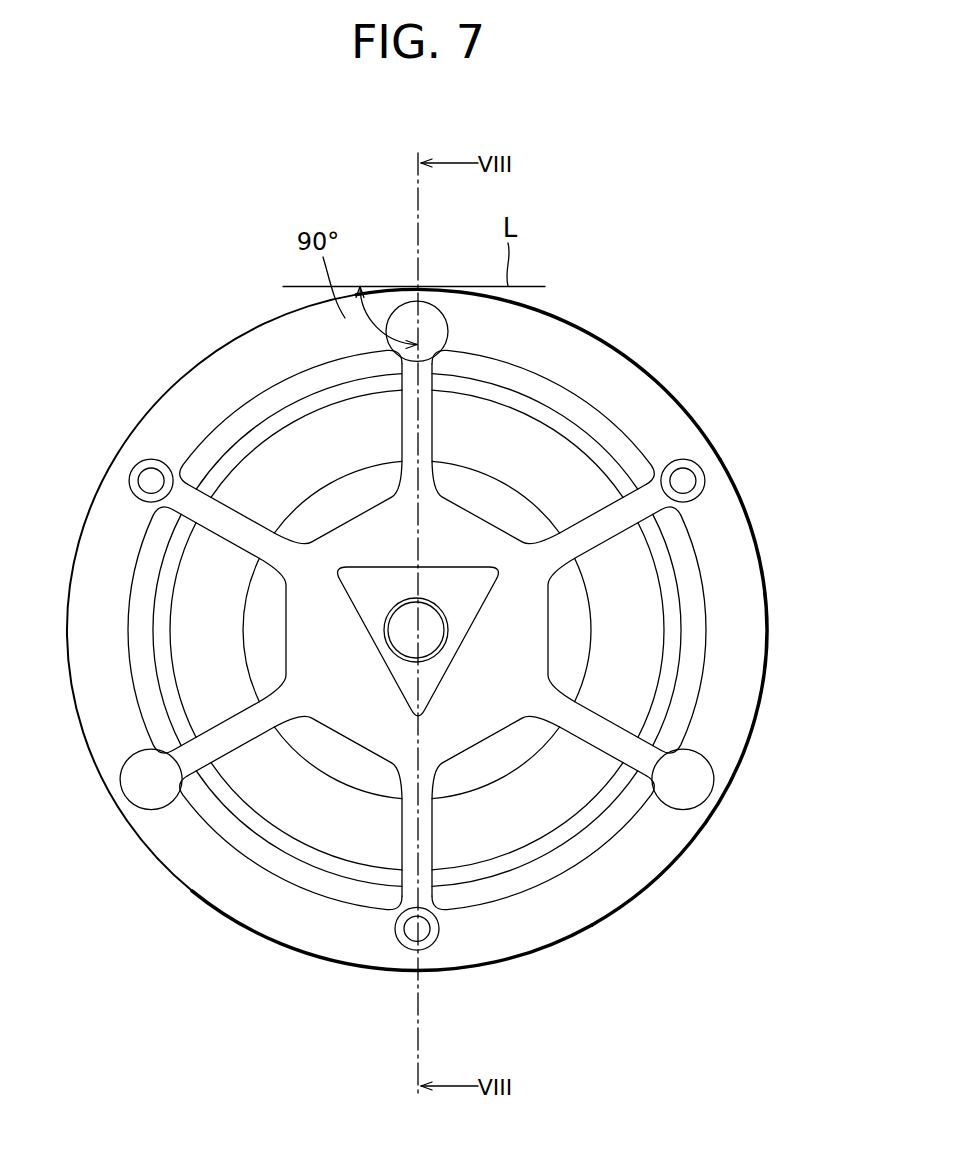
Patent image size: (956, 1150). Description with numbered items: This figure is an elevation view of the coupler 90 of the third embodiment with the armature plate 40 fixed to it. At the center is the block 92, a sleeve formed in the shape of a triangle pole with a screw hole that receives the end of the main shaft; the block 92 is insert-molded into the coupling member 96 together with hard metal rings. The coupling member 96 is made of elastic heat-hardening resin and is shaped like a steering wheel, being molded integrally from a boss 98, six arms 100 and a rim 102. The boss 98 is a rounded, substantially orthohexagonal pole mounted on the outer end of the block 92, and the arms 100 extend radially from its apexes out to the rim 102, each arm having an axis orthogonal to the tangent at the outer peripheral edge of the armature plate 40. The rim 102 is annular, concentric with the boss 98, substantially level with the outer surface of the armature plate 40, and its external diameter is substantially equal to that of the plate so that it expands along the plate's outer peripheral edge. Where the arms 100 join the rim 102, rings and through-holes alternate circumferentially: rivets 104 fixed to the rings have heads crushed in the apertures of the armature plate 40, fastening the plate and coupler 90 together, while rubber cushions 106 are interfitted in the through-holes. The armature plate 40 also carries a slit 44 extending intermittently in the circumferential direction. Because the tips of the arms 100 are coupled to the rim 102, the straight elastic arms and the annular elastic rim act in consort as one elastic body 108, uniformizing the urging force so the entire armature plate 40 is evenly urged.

The coupler 90 is at (671, 309).
The coupling member 96 is at (688, 407).
The elastic body 108 is at (757, 725).
The rim 102 is at (736, 655).
The arms 100 is at (431, 425).
The armature plate 40 is at (686, 592).
The slit 44 is at (273, 838).
The boss 98 is at (490, 710).
The rivets 104 is at (404, 322).
The rubber cushions 106 is at (143, 478).
The block 92 is at (470, 622).